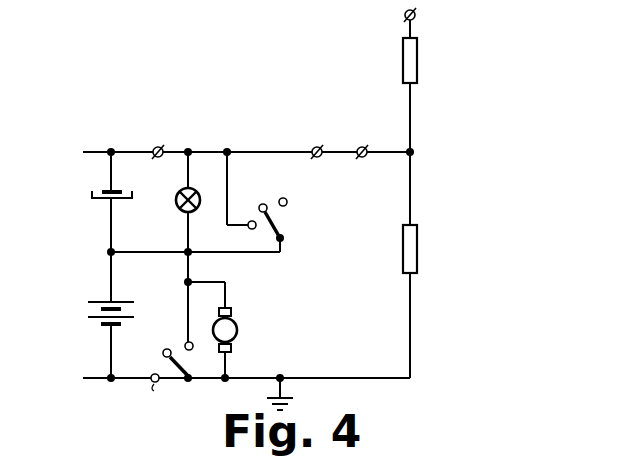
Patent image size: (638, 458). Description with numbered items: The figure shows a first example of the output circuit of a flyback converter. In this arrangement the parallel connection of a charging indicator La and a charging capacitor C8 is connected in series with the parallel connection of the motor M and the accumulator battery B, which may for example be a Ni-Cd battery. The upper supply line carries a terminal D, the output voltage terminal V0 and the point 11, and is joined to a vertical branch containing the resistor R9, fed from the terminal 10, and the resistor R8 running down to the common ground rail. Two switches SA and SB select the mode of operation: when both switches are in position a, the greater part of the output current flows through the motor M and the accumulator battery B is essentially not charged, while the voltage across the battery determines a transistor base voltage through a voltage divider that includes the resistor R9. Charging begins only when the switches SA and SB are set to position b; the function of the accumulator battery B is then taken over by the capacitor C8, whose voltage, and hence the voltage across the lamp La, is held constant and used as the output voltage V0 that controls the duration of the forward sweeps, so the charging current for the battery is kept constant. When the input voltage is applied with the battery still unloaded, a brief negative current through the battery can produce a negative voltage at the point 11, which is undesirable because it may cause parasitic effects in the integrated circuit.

The terminal 10 is at (416, 14).
The point 11 is at (362, 146).
The resistor R9 is at (417, 60).
The resistor R8 is at (417, 250).
The terminal D is at (158, 146).
The output voltage V0 is at (317, 146).
The charging capacitor C8 is at (102, 186).
The charging indicator La is at (176, 201).
The switch SB is at (277, 222).
The switch SA is at (163, 352).
The accumulator battery B is at (96, 309).
The motor M is at (237, 332).